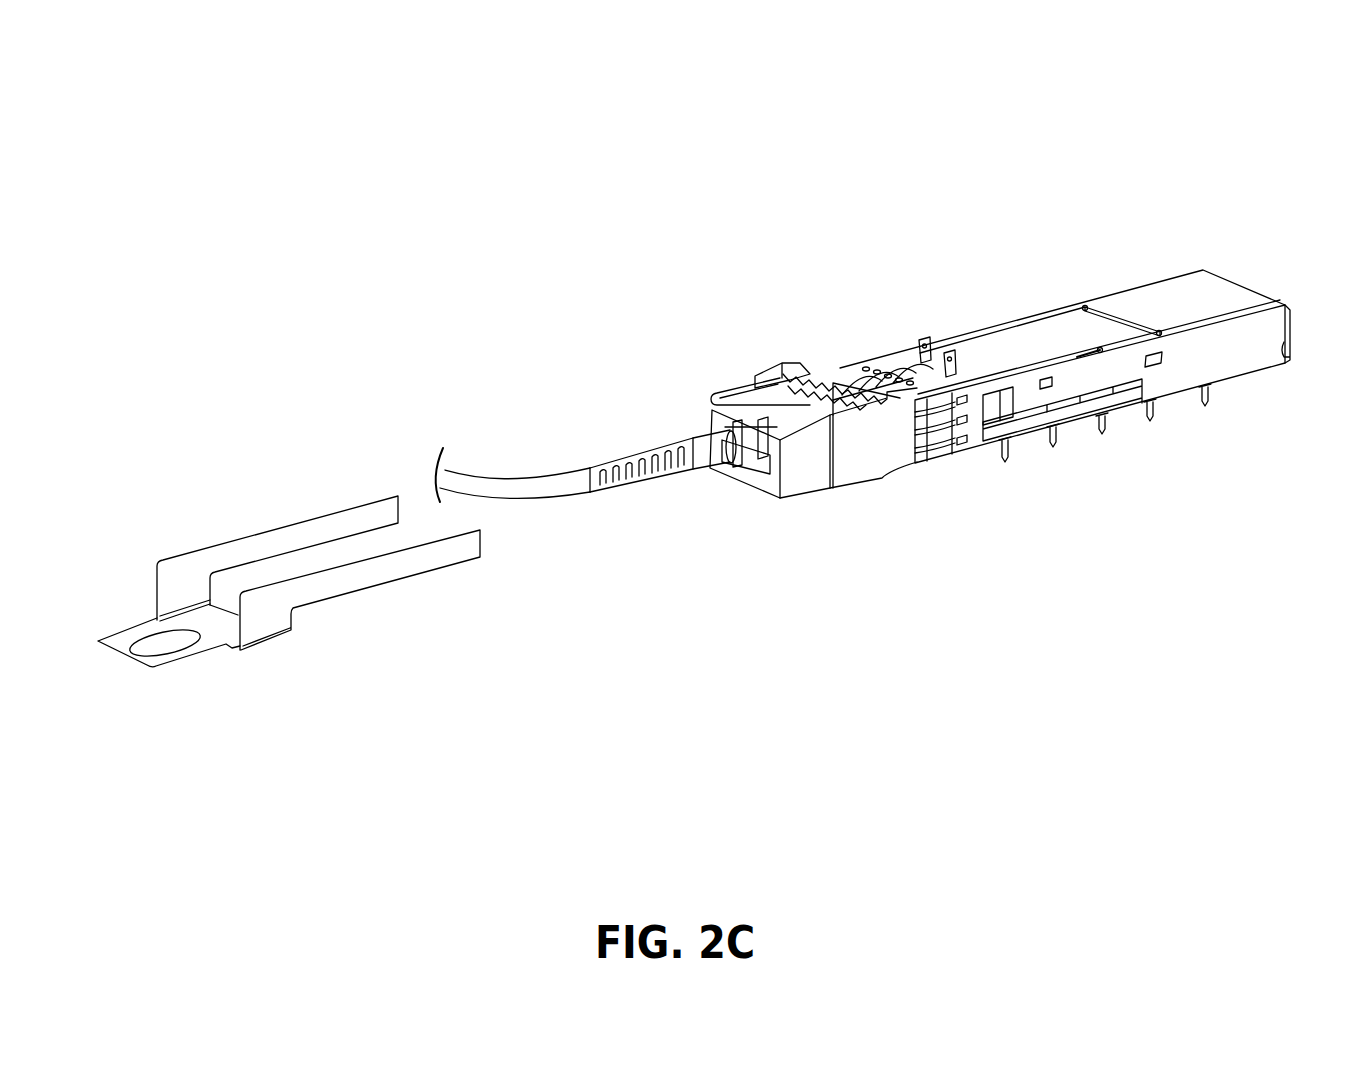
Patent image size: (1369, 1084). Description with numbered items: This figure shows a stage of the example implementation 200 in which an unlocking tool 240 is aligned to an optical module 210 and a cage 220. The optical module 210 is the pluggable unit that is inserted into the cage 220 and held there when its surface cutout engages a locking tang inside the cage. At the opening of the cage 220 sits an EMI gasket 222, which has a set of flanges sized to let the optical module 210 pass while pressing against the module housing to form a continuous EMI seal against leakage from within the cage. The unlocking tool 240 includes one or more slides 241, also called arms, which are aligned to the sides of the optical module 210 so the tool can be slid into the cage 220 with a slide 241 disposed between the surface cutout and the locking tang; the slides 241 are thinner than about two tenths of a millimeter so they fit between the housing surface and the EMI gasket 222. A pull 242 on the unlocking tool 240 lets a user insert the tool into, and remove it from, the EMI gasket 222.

The example implementation 200 is at (166, 59).
The optical module 210 is at (763, 349).
The cage 220 is at (1212, 243).
The EMI gasket 222 is at (852, 345).
The unlocking tool 240 is at (135, 712).
The slides 241 is at (416, 525).
The pull 242 is at (131, 614).